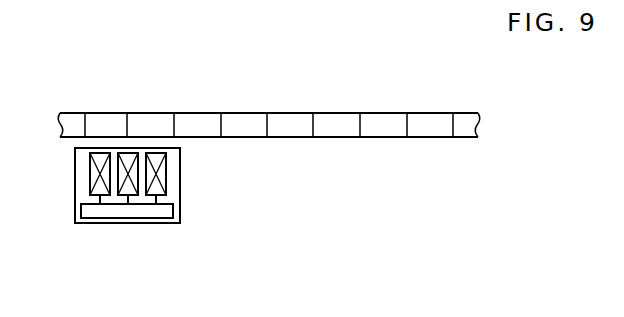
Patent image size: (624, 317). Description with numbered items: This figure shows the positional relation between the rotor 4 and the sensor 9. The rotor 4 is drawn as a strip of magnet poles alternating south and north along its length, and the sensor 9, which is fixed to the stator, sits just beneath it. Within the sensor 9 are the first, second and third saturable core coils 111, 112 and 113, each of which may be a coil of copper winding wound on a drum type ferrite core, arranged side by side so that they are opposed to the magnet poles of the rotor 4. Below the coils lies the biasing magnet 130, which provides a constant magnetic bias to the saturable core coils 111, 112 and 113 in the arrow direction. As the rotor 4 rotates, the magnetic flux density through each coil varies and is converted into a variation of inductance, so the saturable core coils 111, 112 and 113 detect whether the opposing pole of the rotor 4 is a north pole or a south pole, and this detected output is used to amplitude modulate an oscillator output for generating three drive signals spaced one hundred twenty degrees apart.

The rotor 4 is at (447, 116).
The sensor 9 is at (181, 218).
The first saturable core coil 111 is at (90, 173).
The second saturable core coil 112 is at (118, 176).
The third saturable core coil 113 is at (166, 175).
The biasing magnet 130 is at (143, 218).